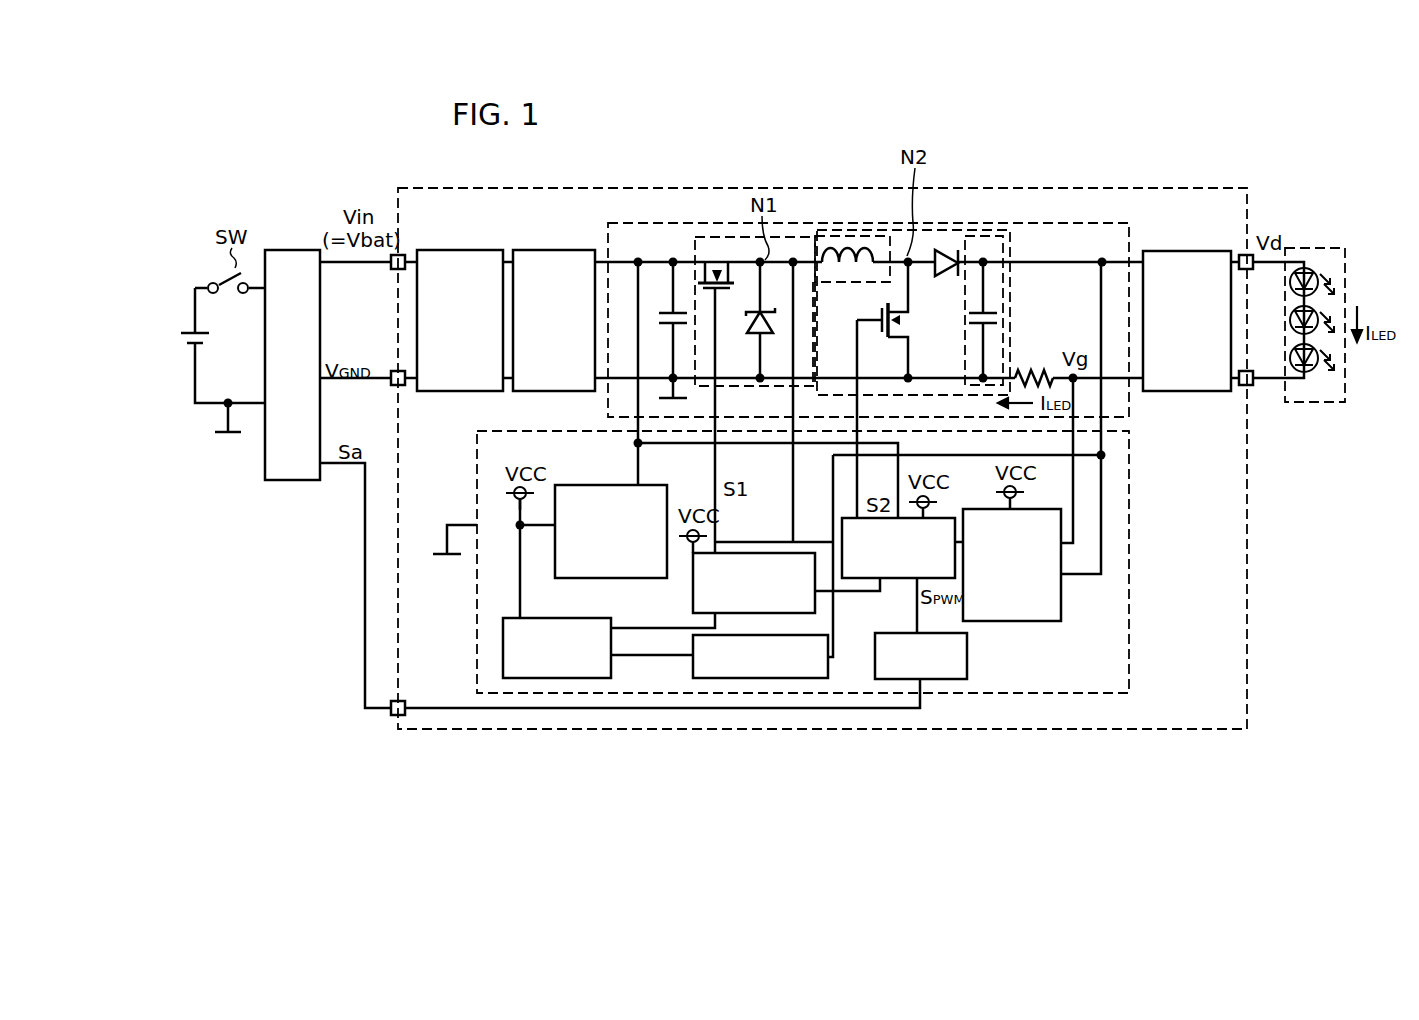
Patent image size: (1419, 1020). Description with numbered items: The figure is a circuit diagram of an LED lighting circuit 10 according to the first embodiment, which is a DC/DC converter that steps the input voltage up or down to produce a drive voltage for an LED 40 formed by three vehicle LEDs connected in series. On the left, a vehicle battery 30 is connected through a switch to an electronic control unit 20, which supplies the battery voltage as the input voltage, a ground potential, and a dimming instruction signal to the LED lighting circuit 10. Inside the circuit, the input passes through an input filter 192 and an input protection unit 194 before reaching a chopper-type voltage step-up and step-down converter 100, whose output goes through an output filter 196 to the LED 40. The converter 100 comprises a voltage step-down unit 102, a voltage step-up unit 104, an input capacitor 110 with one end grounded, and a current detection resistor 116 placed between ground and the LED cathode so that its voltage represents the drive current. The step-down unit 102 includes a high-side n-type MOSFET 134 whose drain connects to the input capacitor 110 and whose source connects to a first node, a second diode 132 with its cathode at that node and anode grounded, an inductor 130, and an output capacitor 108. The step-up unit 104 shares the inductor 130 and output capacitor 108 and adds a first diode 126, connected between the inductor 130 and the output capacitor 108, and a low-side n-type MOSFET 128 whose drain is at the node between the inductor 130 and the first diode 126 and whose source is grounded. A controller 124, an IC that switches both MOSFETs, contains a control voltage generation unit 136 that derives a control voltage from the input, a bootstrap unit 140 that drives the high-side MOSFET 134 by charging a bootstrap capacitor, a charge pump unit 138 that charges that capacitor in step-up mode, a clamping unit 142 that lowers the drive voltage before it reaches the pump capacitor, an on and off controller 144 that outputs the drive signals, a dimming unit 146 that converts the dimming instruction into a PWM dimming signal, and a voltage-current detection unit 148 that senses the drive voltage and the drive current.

The LED lighting circuit 10 is at (1247, 708).
The electronic control unit 20 is at (275, 482).
The vehicle battery 30 is at (190, 344).
The LED 40 is at (1320, 402).
The voltage step-up and step-down converter 100 is at (1105, 223).
The voltage step-down unit 102 is at (727, 237).
The voltage step-up unit 104 is at (1015, 248).
The output capacitor 108 is at (1000, 313).
The input capacitor 110 is at (668, 312).
The current detection resistor 116 is at (1034, 374).
The controller 124 is at (1129, 676).
The first diode 126 is at (947, 252).
The low-side n-type MOSFET 128 is at (912, 318).
The inductor 130 is at (878, 256).
The second diode 132 is at (780, 314).
The high-side n-type MOSFET 134 is at (712, 258).
The control voltage generation unit 136 is at (597, 485).
The charge pump unit 138 is at (511, 618).
The bootstrap unit 140 is at (693, 598).
The clamping unit 142 is at (693, 672).
The on and off controller 144 is at (853, 580).
The dimming unit 146 is at (967, 640).
The voltage-current detection unit 148 is at (1061, 603).
The input filter 192 is at (458, 250).
The input protection unit 194 is at (553, 250).
The output filter 196 is at (1195, 251).